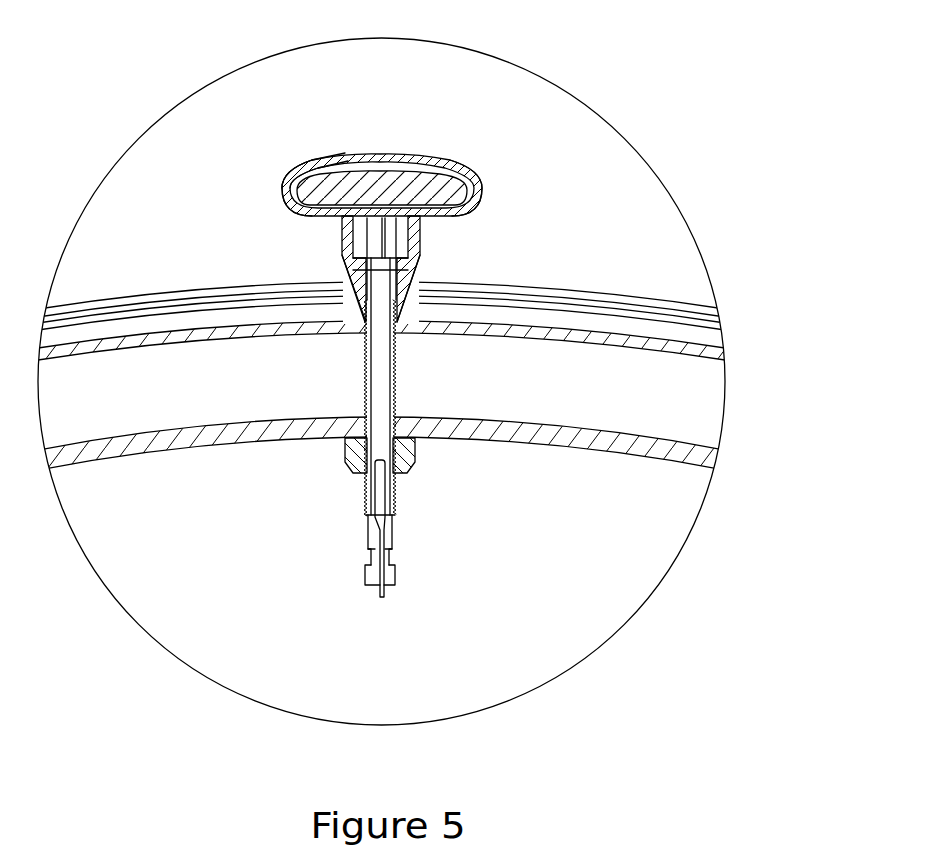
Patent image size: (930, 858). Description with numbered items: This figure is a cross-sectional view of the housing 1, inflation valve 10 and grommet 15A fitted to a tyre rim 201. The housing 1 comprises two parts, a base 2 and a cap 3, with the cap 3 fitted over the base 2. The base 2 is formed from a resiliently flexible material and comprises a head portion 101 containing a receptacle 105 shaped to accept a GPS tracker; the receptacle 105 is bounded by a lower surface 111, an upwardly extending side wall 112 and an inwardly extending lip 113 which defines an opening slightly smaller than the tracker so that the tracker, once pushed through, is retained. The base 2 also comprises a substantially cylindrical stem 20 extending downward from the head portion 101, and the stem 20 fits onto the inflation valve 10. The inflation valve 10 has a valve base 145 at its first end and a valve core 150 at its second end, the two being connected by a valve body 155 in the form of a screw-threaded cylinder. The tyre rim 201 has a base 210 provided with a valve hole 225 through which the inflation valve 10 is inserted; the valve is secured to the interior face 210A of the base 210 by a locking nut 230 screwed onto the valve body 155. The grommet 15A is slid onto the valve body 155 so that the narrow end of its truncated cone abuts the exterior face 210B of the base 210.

The housing 1 is at (416, 127).
The base 2 is at (270, 268).
The cap 3 is at (445, 157).
The inflation valve 10 is at (405, 307).
The grommet 15A is at (350, 303).
The stem 20 is at (420, 254).
The head portion 101 is at (470, 200).
The receptacle 105 is at (442, 199).
The lower surface 111 is at (331, 163).
The side wall 112 is at (285, 200).
The lip 113 is at (297, 168).
The valve base 145 is at (345, 262).
The valve core 150 is at (390, 577).
The valve body 155 is at (366, 477).
The tyre rim 201 is at (527, 373).
The base 210 is at (383, 381).
The interior face 210A is at (572, 450).
The exterior face 210B is at (178, 328).
The valve hole 225 is at (400, 417).
The locking nut 230 is at (409, 453).